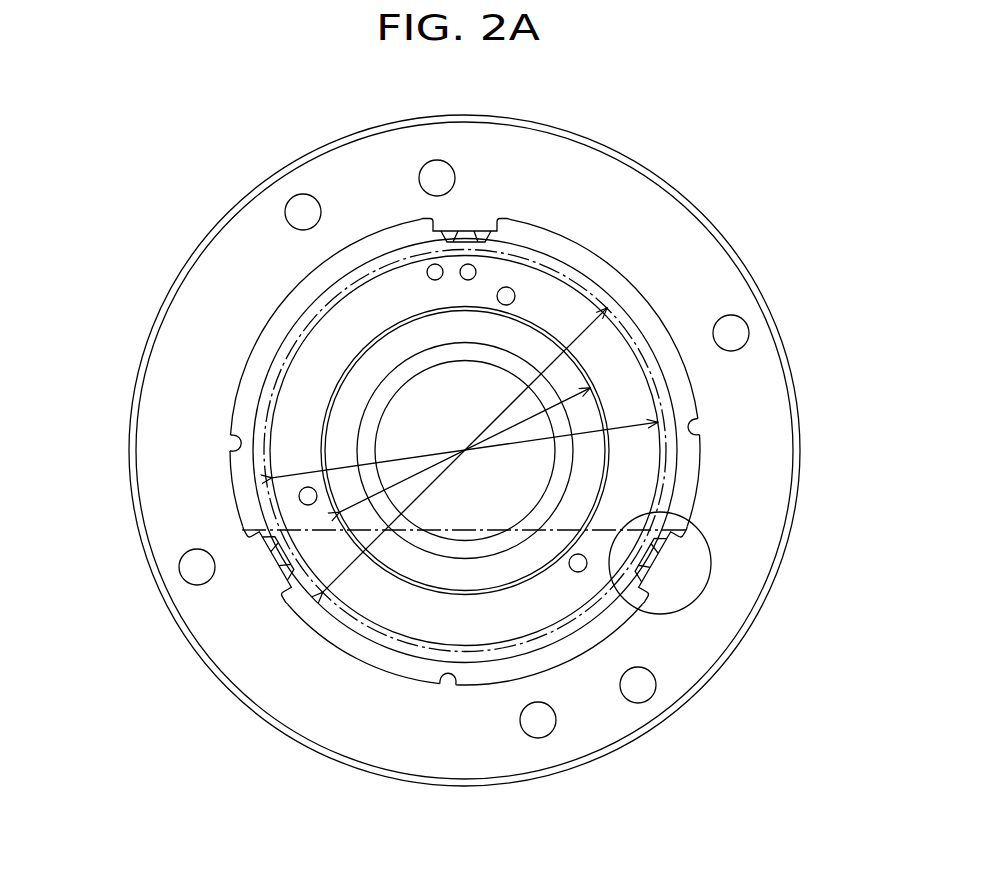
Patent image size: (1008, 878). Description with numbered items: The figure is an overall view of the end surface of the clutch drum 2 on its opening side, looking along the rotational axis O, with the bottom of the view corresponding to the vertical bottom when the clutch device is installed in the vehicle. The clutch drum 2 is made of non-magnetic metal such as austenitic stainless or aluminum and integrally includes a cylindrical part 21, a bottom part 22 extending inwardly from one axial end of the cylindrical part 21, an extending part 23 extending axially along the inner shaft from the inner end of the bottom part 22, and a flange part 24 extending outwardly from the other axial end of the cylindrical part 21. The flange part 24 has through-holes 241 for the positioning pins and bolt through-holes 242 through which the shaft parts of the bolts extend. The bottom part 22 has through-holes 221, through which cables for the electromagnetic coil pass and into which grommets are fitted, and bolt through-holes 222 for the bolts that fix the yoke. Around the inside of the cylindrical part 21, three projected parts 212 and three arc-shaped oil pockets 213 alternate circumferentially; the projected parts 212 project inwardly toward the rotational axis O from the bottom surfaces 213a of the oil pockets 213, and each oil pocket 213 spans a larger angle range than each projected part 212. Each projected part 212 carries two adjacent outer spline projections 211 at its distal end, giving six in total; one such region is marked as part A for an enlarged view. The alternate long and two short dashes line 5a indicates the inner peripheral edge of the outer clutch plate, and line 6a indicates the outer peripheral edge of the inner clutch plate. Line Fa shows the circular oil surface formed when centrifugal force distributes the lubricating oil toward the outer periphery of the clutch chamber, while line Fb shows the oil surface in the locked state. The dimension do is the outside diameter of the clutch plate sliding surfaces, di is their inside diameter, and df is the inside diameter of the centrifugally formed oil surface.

The clutch drum 2 is at (638, 109).
The cylindrical part 21 is at (277, 277).
The bottom part 22 is at (320, 347).
The extending part 23 is at (370, 420).
The flange part 24 is at (167, 348).
The outer spline projections 211 is at (484, 231).
The projected parts 212 is at (498, 218).
The oil pockets 213 is at (229, 418).
The bottom surfaces 213a is at (224, 441).
The through-holes 221 is at (465, 264).
The bolt through-holes 222 is at (512, 290).
The through-holes 241 is at (430, 161).
The bolt through-holes 242 is at (290, 198).
The alternate long and two short dashes line 5a is at (585, 378).
The alternate long and two short dashes line 6a is at (617, 317).
The part A is at (710, 558).
The alternate long and two short dashes line Fa is at (644, 349).
The alternate long and two short dashes line Fb is at (458, 528).
The rotational axis O is at (465, 451).
The outside diameter do is at (465, 449).
The inside diameter di is at (465, 441).
The inside diameter of the oil surface df is at (465, 439).